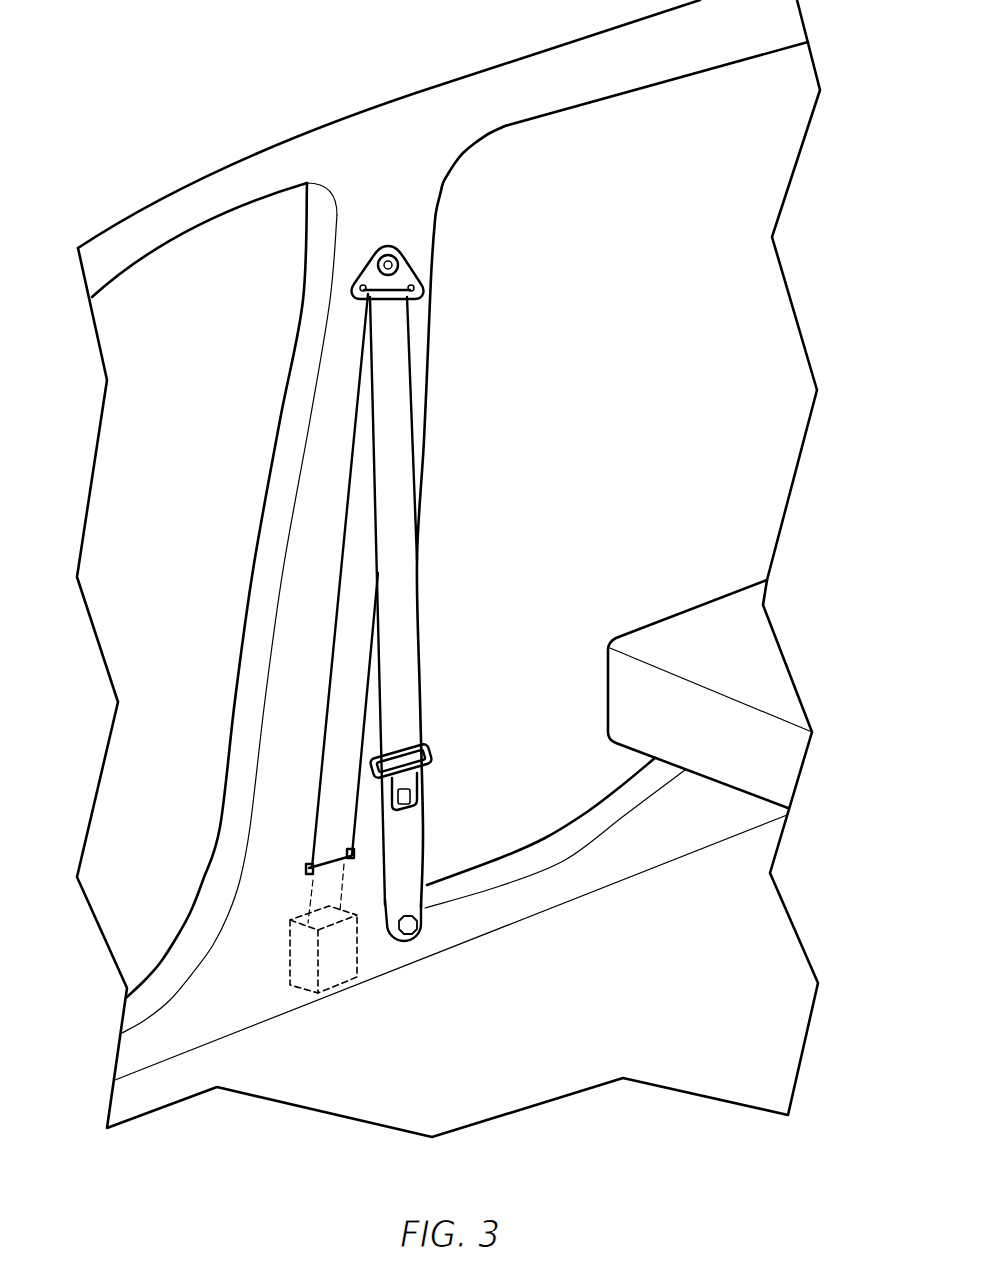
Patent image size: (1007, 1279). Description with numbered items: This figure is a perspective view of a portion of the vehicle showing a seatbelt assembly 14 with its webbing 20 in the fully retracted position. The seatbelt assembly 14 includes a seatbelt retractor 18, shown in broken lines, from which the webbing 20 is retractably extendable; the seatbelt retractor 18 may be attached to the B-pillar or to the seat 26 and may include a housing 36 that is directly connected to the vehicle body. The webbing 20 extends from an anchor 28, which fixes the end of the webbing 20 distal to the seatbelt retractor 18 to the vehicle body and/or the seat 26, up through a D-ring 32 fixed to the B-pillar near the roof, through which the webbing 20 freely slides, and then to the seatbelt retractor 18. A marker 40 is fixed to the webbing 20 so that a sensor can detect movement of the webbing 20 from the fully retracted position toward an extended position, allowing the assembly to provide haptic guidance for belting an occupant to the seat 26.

The seatbelt assembly 14 is at (322, 558).
The seatbelt retractor 18 is at (277, 947).
The webbing 20 is at (358, 497).
The seat 26 is at (740, 763).
The anchor 28 is at (408, 942).
The D-ring 32 is at (410, 264).
The housing 36 is at (330, 990).
The marker 40 is at (435, 752).